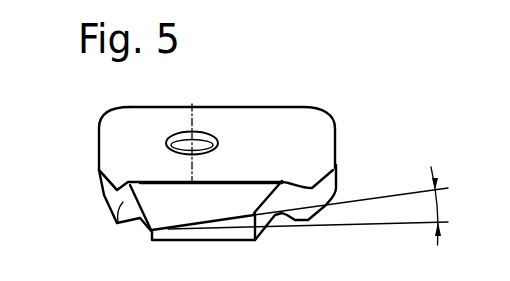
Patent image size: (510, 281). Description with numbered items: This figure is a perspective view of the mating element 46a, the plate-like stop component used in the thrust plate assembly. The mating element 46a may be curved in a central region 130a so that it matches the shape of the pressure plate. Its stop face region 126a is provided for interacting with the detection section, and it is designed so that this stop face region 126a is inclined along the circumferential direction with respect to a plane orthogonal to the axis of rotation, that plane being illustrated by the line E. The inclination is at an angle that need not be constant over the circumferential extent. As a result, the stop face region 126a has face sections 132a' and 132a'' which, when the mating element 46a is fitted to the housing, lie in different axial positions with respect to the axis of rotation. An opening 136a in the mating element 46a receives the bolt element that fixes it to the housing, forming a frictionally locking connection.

The mating element 46a is at (272, 122).
The opening 136a is at (190, 137).
The stop face region 126a is at (218, 188).
The central region 130a is at (113, 223).
The face section 132a' is at (97, 144).
The face section 132a'' is at (342, 164).
The line E is at (337, 224).